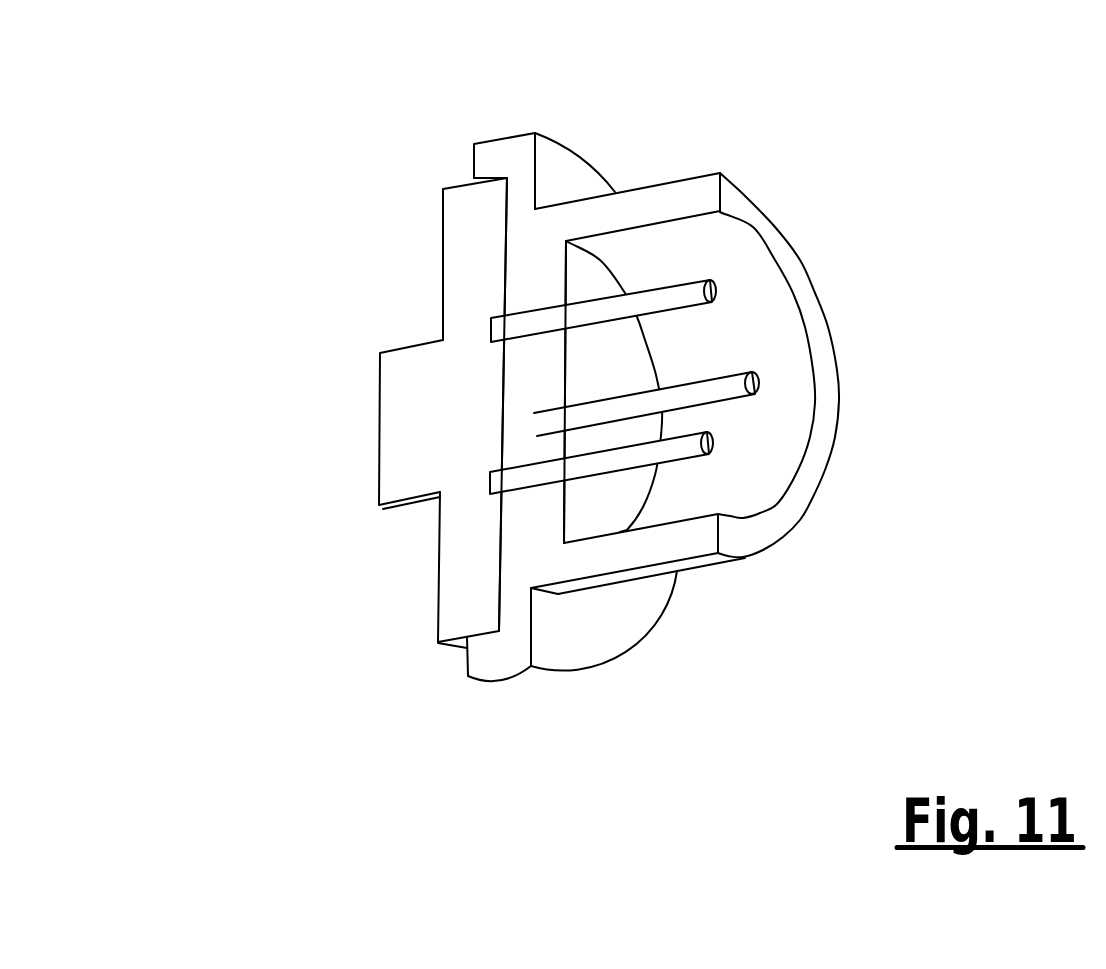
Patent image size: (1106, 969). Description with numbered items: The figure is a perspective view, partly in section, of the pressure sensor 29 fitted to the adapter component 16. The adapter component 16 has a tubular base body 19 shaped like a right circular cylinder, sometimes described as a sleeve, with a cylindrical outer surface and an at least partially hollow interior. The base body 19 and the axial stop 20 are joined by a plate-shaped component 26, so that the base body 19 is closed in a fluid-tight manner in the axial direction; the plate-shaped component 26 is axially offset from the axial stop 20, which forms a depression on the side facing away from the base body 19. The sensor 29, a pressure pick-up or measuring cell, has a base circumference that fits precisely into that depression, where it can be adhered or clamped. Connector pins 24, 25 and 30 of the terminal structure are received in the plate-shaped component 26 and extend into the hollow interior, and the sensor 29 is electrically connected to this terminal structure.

The adapter component 16 is at (615, 175).
The tubular base body 19 is at (677, 200).
The axial stop 20 is at (505, 162).
The pin 24 is at (690, 445).
The pin 25 is at (690, 290).
The plate-shaped component 26 is at (513, 597).
The pressure sensor 29 is at (427, 448).
The pin 30 is at (733, 388).